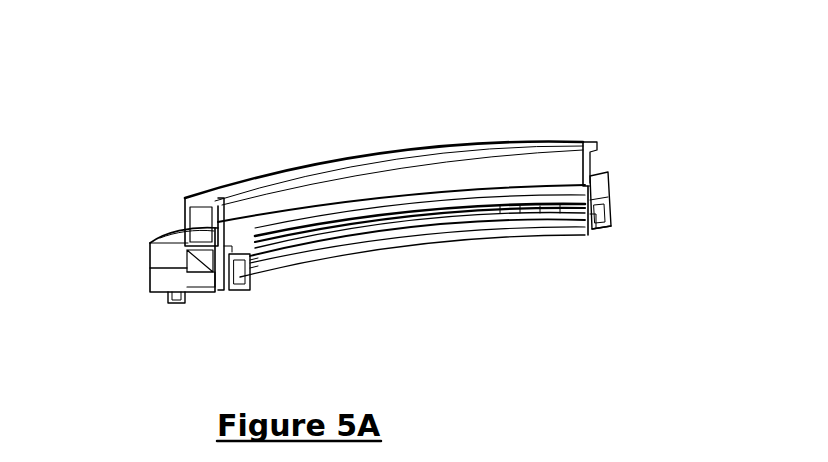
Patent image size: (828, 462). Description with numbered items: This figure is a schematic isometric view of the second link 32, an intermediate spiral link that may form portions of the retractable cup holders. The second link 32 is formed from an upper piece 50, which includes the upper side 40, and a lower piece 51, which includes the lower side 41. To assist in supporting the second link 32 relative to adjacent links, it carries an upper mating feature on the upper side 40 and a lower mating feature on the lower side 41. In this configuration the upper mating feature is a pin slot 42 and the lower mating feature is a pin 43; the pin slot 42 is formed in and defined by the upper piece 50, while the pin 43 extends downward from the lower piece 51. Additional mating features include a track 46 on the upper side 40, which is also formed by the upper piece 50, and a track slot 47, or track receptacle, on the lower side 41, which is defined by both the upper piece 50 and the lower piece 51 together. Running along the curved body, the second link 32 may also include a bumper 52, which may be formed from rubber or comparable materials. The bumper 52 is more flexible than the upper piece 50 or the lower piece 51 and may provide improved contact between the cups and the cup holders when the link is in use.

The second link 32 is at (443, 80).
The upper side 40 is at (594, 175).
The lower side 41 is at (600, 231).
The pin slot 42 is at (183, 208).
The pin 43 is at (178, 304).
The track 46 is at (530, 158).
The track slot 47 is at (224, 278).
The upper piece 50 is at (153, 250).
The lower piece 51 is at (155, 278).
The bumper 52 is at (365, 230).